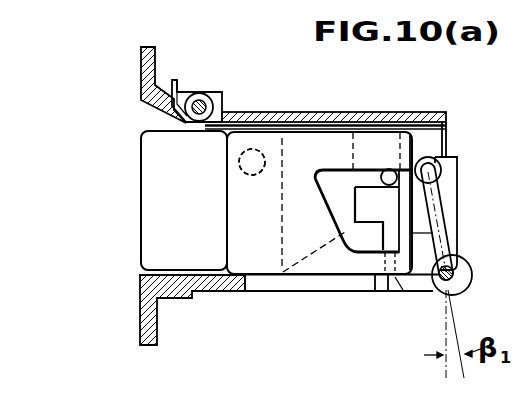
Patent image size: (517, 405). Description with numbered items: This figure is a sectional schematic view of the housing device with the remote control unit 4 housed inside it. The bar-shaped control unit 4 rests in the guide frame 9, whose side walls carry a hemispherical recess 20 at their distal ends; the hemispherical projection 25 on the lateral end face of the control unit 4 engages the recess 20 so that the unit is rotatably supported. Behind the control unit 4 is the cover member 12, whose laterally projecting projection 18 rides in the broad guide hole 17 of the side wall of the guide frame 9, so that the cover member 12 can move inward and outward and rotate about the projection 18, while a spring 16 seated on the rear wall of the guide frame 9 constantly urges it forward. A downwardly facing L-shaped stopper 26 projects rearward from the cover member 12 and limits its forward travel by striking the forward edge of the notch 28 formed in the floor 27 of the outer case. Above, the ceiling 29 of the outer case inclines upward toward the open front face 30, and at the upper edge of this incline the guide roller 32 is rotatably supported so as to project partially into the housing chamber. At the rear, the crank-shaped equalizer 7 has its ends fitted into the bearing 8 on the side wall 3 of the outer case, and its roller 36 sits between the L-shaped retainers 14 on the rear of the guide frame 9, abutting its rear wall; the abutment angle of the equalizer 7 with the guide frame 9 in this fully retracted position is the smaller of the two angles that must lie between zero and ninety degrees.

The side wall 3 is at (435, 138).
The control unit 4 is at (147, 232).
The equalizer 7 is at (437, 236).
The bearing 8 is at (463, 282).
The guide frame 9 is at (362, 142).
The cover member 12 is at (312, 293).
The L-shaped retainer 14 is at (452, 190).
The spring 16 is at (412, 169).
The guide hole 17 is at (353, 268).
The projection 18 is at (388, 169).
The hemispherical recess 20 is at (239, 161).
The hemispherical projection 25 is at (214, 177).
The L-shaped stopper 26 is at (393, 280).
The floor 27 is at (217, 293).
The notch 28 is at (262, 283).
The ceiling 29 is at (273, 115).
The open front face 30 is at (144, 110).
The guide roller 32 is at (199, 100).
The roller 36 is at (436, 161).